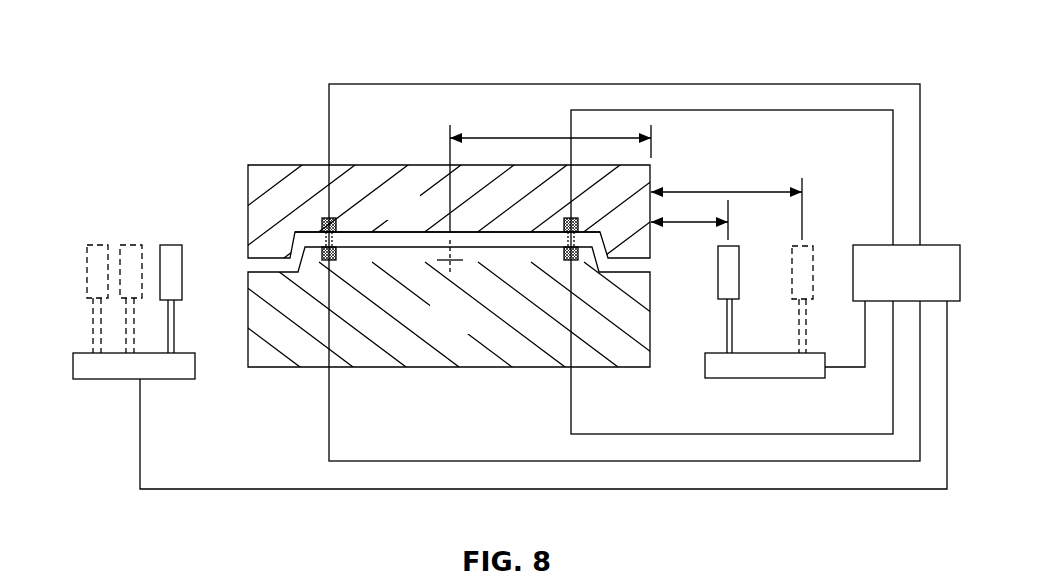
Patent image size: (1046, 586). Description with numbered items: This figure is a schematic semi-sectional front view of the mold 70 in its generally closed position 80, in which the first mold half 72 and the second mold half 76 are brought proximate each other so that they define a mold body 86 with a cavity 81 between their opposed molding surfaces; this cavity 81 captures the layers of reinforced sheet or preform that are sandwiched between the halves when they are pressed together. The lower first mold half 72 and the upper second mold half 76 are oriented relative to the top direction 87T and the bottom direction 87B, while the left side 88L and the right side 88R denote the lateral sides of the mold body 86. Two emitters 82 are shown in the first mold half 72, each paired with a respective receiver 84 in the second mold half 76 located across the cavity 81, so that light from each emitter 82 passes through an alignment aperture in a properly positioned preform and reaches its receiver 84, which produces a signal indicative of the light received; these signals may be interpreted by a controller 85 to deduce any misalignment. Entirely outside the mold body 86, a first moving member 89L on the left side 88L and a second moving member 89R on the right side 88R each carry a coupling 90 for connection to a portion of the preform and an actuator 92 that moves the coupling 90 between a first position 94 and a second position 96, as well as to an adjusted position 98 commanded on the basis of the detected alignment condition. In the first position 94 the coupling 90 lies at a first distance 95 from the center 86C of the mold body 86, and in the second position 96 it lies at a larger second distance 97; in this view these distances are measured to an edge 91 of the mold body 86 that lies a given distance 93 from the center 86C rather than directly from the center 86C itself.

The mold 70 is at (481, 257).
The generally closed position 80 is at (158, 75).
The mold body 86 is at (288, 108).
The center of the mold body 86C is at (452, 262).
The first/left lateral side 88L is at (142, 278).
The second/right lateral side 88R is at (862, 196).
The first moving member 89L is at (142, 300).
The second moving member 89R is at (732, 392).
The second mold half 76 is at (413, 217).
The first mold half 72 is at (467, 331).
The top direction/location 87T is at (437, 121).
The bottom direction/location 87B is at (460, 443).
The cavity 81 is at (357, 231).
The emitter 82 is at (323, 220).
The sensor/receiver 84 is at (395, 279).
The controller 85 is at (922, 285).
The coupling 90 is at (142, 244).
The actuator 92 is at (165, 370).
The first position 94 is at (170, 250).
The second position 96 is at (98, 245).
The adjusted position 98 is at (131, 250).
The edge of the mold body 91 is at (653, 177).
The given distance 93 is at (542, 136).
The first distance 95 is at (690, 222).
The second distance 97 is at (733, 192).